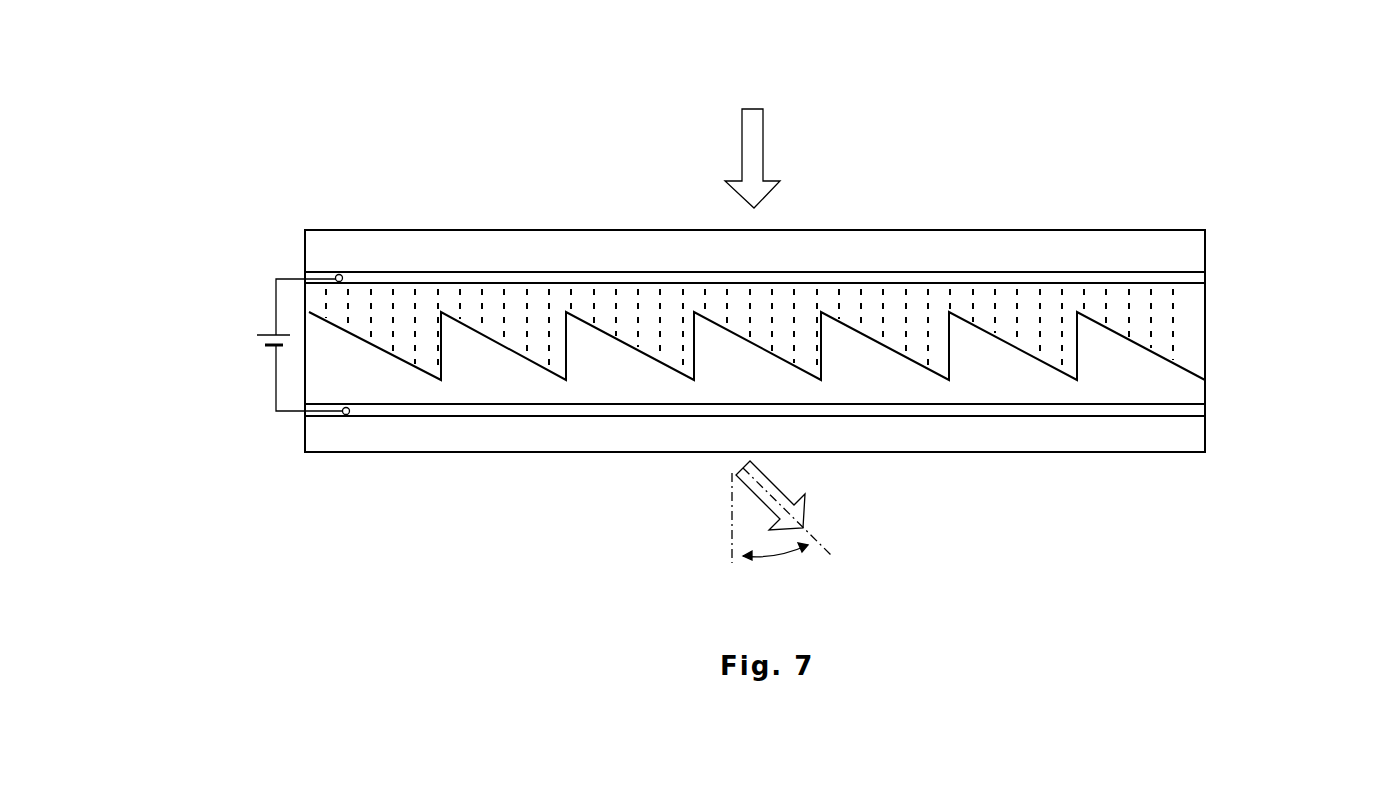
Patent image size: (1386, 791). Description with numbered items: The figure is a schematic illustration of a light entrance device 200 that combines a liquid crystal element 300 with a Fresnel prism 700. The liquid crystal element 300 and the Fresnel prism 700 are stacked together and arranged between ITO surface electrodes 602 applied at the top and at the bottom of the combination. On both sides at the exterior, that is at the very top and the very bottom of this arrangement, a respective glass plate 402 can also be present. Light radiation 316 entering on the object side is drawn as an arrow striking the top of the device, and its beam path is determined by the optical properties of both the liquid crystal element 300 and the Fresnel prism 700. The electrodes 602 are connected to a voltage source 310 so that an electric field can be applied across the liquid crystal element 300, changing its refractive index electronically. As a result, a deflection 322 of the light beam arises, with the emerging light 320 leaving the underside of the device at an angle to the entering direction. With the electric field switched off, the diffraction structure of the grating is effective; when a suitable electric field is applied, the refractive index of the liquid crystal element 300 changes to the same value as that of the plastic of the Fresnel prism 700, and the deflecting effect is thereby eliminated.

The light entrance device 200 is at (1167, 137).
The glass plate 402 is at (1177, 260).
The ITO surface electrode 602 is at (432, 280).
The voltage source 310 is at (258, 342).
The Fresnel prism 700 is at (1147, 382).
The liquid crystal element 300 is at (1172, 342).
The light radiation 316 is at (764, 149).
The output light 320 is at (782, 490).
The deflection 322 is at (778, 560).